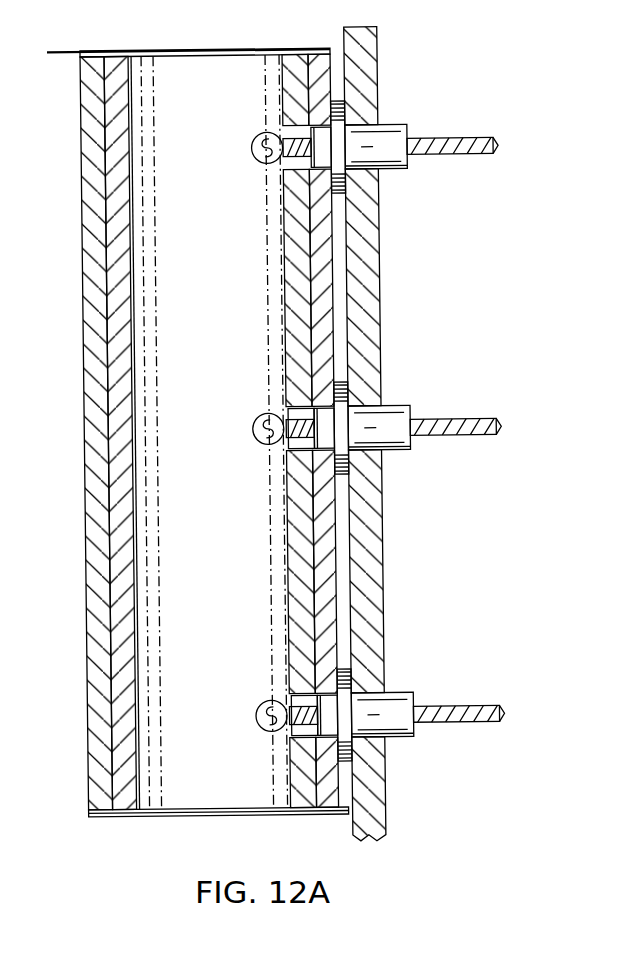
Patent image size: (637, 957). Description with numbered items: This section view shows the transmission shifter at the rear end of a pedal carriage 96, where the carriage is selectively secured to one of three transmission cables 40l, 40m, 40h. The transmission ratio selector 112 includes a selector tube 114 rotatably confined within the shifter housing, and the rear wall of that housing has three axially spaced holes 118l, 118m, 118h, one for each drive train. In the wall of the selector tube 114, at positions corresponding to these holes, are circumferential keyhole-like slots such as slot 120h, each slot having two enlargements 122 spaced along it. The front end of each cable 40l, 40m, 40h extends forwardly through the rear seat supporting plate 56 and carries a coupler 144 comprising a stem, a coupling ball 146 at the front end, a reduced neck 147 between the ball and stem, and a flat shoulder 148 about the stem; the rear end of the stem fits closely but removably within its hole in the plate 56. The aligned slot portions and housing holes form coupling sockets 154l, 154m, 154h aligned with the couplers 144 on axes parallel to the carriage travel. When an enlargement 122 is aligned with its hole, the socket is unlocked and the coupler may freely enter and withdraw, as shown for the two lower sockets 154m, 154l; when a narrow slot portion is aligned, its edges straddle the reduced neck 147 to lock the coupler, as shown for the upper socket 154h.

The pedal carriage 96 is at (68, 50).
The transmission ratio selector 112 is at (207, 51).
The selector tube 114 is at (184, 811).
The rear plate 56 is at (378, 826).
The coupling ball 146 is at (258, 139).
The reduced neck 147 is at (280, 181).
The coupling socket (high) 154h is at (276, 170).
The coupling socket (middle) 154m is at (283, 407).
The coupling socket (low) 154l is at (280, 695).
The keyhole-like slot (high) 120h is at (300, 125).
The slot enlargement 122 is at (281, 452).
The flat shoulder 148 is at (350, 108).
The selector housing hole (high) 118h is at (375, 128).
The selector housing hole (middle) 118m is at (391, 453).
The selector housing hole (low) 118l is at (393, 740).
The cable coupler 144 is at (386, 175).
The transmission cable (high) 40h is at (450, 142).
The transmission cable (middle) 40m is at (451, 423).
The transmission cable (low) 40l is at (458, 712).